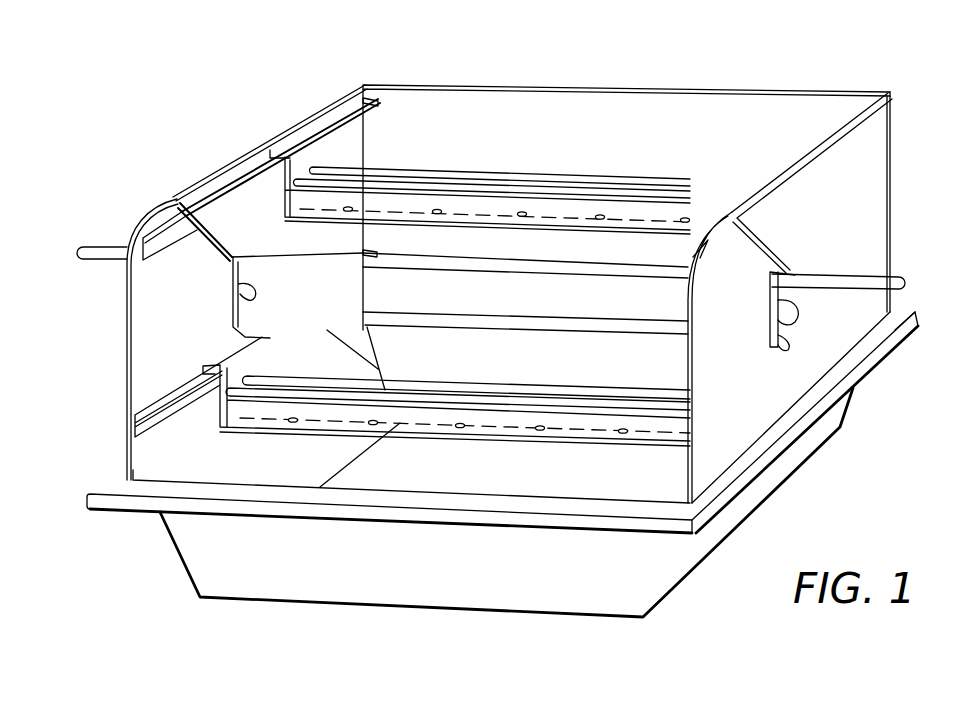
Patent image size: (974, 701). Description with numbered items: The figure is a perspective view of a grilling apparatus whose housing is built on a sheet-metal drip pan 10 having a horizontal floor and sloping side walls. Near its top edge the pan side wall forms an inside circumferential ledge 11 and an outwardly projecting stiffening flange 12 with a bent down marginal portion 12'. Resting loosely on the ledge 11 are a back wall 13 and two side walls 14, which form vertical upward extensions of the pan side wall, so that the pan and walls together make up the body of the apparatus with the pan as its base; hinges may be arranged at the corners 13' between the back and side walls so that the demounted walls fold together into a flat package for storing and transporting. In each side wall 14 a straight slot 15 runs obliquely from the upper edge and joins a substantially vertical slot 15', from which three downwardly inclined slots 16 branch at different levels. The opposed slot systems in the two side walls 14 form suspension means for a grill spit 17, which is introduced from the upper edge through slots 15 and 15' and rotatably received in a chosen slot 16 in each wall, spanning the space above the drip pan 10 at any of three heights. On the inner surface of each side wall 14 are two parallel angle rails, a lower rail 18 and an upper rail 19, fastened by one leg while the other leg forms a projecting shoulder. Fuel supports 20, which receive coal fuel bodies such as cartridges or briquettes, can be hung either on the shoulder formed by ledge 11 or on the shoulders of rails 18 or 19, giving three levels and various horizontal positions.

The drip pan 10 is at (744, 505).
The ledge 11 is at (163, 470).
The stiffening flange 12 is at (482, 422).
The bent down marginal portion 12' is at (932, 324).
The back wall 13 is at (626, 190).
The corner hinge location 13' is at (396, 177).
The side wall 14 is at (884, 207).
The straight slot 15 is at (812, 183).
The vertical slot 15' is at (761, 309).
The branch slot 16 is at (796, 304).
The grill spit 17 is at (101, 249).
The lower angle rail 18 is at (157, 401).
The upper angle rail 19 is at (237, 183).
The fuel support 20 is at (489, 170).